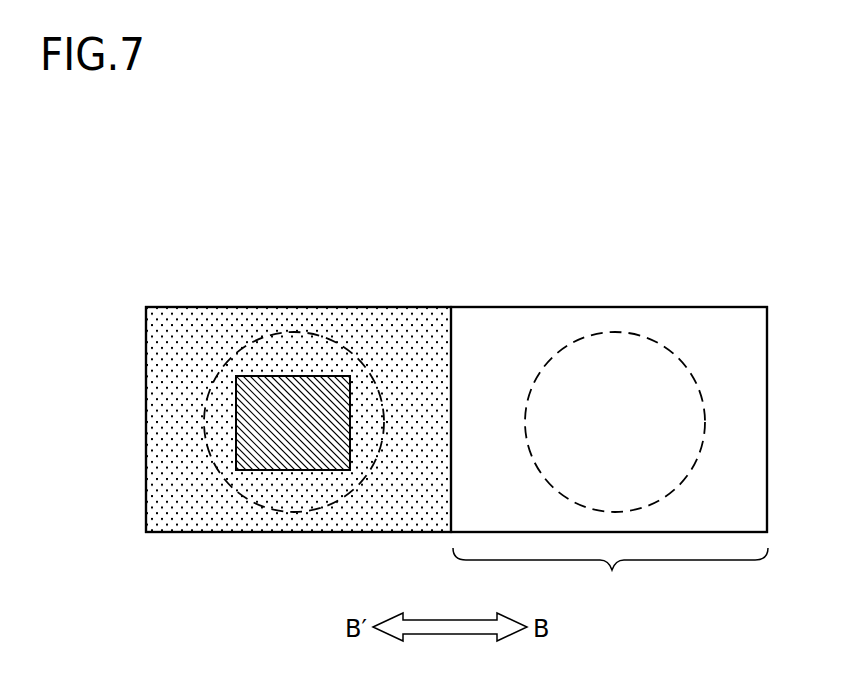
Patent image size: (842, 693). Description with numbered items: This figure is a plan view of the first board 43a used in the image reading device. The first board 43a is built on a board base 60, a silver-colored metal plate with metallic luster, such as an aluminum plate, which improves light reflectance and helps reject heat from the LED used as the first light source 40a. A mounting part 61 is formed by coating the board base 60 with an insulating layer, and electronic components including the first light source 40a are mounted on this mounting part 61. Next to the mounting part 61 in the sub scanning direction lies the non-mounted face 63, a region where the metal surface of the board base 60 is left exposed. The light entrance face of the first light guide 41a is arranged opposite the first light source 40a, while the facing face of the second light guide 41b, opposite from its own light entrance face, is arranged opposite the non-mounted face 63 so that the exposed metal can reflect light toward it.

The first board 43a is at (582, 235).
The mounting part 61 is at (200, 333).
The board base 60 is at (477, 308).
The first light guide 41a is at (337, 342).
The second light guide 41b is at (672, 350).
The first light source 40a is at (293, 455).
The non-mounted face 63 is at (610, 576).